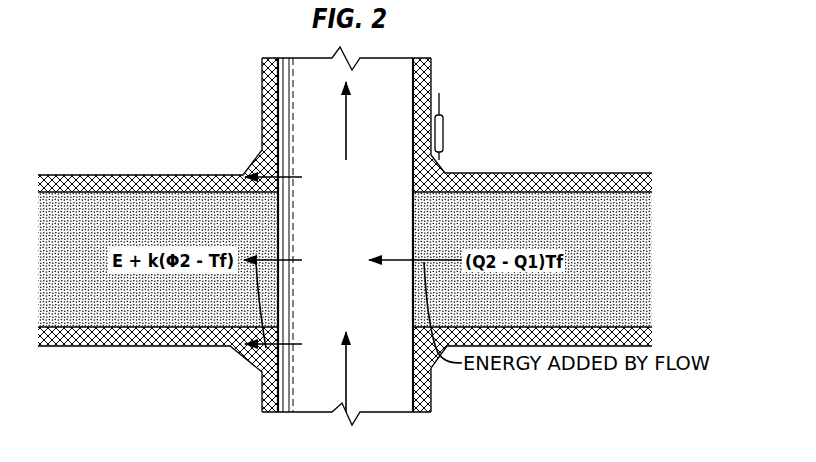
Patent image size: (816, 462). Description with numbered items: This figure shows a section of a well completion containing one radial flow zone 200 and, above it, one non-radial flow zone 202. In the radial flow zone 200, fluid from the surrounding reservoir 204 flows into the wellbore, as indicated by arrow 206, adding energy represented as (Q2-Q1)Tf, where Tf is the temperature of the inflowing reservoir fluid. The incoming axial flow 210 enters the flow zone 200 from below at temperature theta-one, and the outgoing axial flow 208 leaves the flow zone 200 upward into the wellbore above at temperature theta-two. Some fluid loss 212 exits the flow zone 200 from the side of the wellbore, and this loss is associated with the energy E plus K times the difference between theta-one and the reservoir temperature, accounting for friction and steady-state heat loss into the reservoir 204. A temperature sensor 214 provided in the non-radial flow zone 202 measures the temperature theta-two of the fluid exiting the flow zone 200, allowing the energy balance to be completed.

The radial flow zone 200 is at (389, 259).
The non-radial flow zone 202 is at (667, 92).
The reservoir 204 is at (637, 310).
The arrow indicating fluid flow from reservoir into wellbore 206 is at (405, 256).
The outgoing axial flow 208 is at (345, 123).
The incoming axial flow 210 is at (347, 373).
The fluid loss exiting from side of wellbore 212 is at (268, 172).
The temperature sensor 214 is at (444, 130).